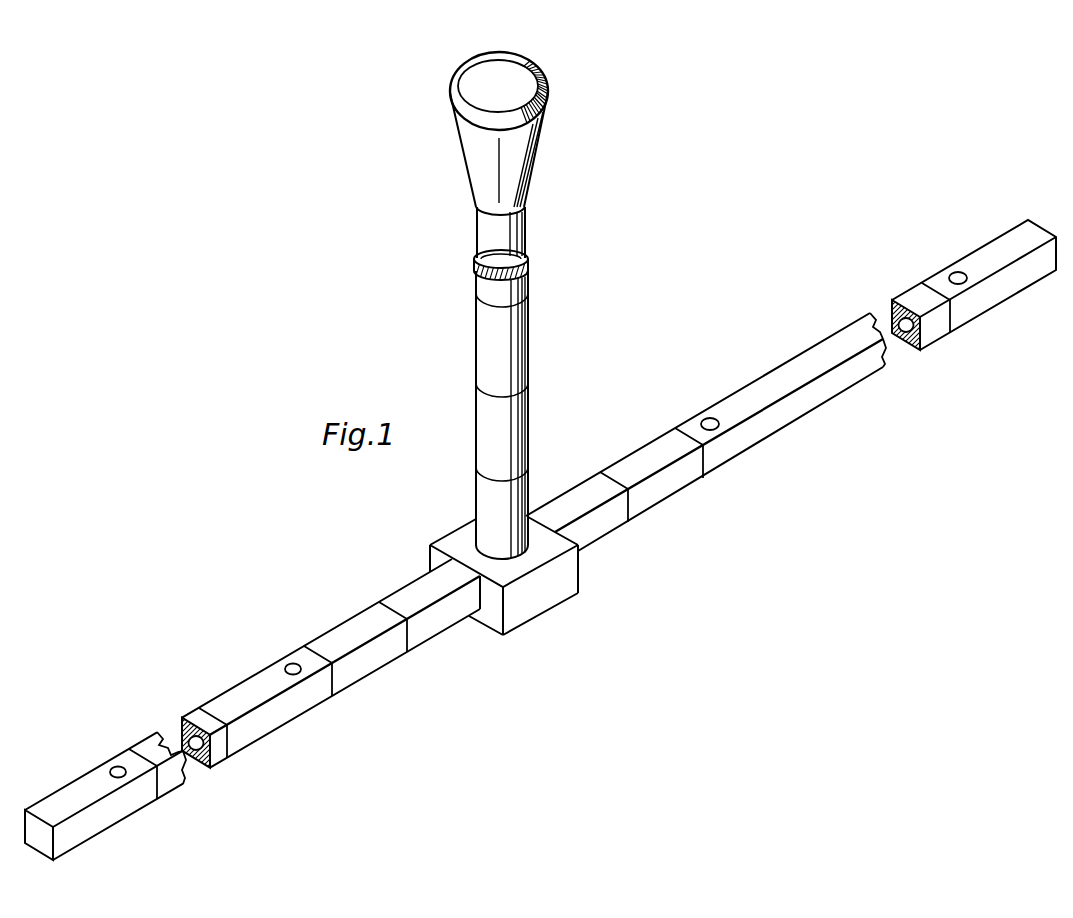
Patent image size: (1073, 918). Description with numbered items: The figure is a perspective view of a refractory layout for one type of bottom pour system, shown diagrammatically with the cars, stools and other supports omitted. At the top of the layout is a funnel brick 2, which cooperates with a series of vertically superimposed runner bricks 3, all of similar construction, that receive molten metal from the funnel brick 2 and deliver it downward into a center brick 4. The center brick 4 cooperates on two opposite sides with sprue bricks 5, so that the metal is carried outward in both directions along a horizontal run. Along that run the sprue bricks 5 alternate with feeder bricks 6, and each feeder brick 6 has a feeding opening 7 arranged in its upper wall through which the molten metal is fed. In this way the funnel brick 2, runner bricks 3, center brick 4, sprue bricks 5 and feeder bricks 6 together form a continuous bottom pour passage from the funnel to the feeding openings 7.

The funnel brick 2 is at (505, 163).
The runner bricks 3 is at (530, 278).
The center brick 4 is at (558, 580).
The sprue bricks 5 is at (390, 652).
The feeder bricks 6 is at (287, 712).
The feeding openings 7 is at (290, 662).